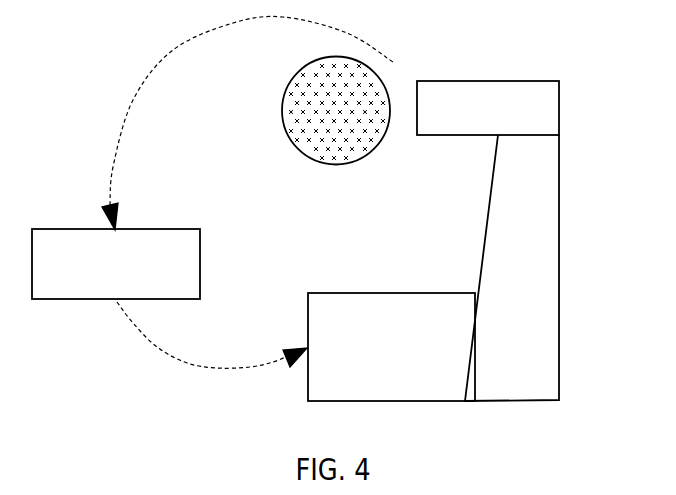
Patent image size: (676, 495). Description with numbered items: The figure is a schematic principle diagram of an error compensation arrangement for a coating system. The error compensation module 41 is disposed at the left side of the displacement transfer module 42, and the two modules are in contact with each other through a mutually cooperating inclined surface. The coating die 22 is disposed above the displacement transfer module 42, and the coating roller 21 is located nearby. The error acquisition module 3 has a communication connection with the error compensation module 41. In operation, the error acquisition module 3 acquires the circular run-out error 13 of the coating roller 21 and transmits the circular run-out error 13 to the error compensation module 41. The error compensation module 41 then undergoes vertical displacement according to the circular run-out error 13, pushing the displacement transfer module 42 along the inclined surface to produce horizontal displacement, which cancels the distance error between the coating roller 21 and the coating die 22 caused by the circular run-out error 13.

The error acquisition module 3 is at (160, 228).
The circular run-out error 13 is at (247, 206).
The coating roller 21 is at (283, 112).
The coating die 22 is at (490, 81).
The error compensation module 41 is at (333, 292).
The displacement transfer module 42 is at (559, 222).